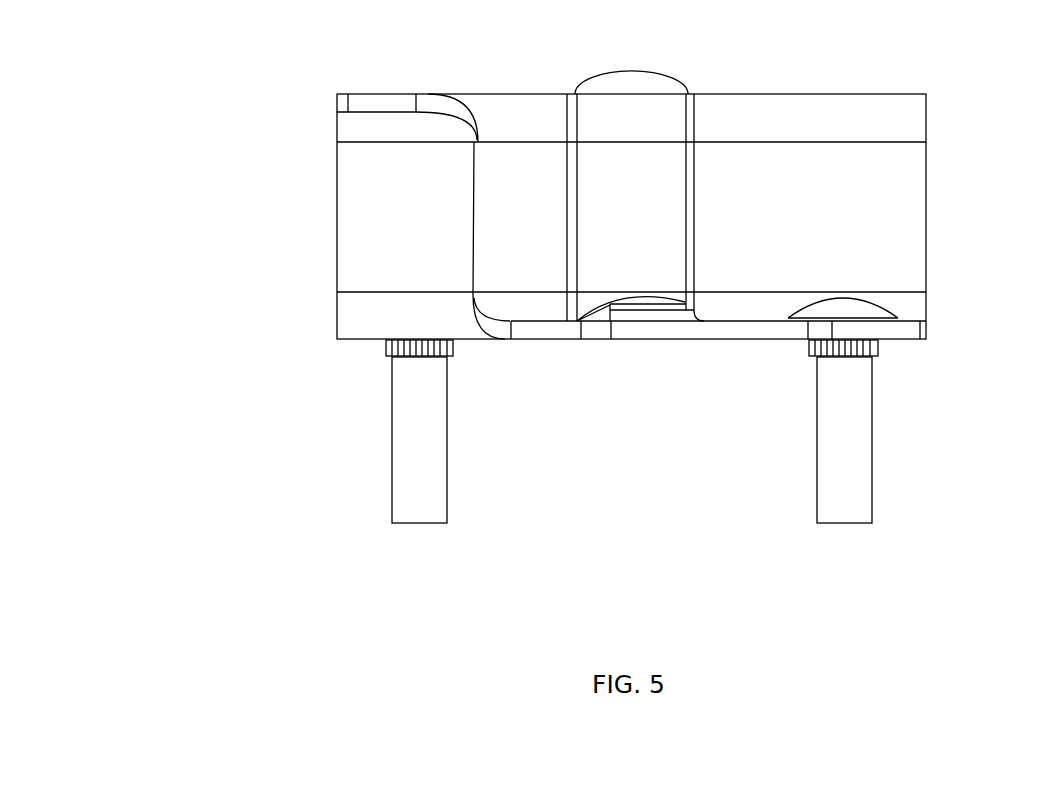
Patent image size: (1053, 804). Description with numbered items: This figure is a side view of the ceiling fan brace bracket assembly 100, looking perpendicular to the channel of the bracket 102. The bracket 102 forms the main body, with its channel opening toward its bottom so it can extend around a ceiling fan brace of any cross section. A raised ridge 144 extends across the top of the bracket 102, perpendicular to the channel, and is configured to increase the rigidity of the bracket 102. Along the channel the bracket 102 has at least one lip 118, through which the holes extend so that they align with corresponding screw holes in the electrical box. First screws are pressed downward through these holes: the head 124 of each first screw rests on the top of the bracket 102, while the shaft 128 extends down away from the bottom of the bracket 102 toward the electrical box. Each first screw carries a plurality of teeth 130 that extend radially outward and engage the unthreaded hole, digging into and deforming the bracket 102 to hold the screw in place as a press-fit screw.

The bracket assembly 100 is at (250, 177).
The bracket 102 is at (515, 130).
The raised ridge 144 is at (640, 105).
The head 124 is at (843, 305).
The lip 118 is at (722, 328).
The teeth 130 is at (405, 352).
The shaft 128 is at (422, 457).